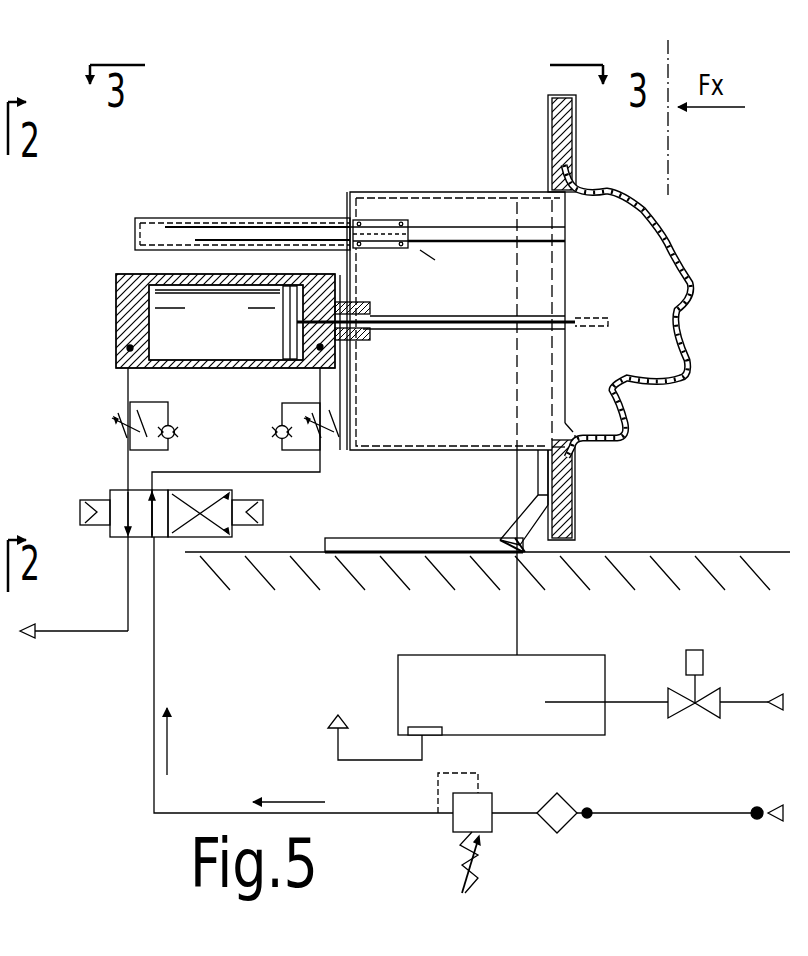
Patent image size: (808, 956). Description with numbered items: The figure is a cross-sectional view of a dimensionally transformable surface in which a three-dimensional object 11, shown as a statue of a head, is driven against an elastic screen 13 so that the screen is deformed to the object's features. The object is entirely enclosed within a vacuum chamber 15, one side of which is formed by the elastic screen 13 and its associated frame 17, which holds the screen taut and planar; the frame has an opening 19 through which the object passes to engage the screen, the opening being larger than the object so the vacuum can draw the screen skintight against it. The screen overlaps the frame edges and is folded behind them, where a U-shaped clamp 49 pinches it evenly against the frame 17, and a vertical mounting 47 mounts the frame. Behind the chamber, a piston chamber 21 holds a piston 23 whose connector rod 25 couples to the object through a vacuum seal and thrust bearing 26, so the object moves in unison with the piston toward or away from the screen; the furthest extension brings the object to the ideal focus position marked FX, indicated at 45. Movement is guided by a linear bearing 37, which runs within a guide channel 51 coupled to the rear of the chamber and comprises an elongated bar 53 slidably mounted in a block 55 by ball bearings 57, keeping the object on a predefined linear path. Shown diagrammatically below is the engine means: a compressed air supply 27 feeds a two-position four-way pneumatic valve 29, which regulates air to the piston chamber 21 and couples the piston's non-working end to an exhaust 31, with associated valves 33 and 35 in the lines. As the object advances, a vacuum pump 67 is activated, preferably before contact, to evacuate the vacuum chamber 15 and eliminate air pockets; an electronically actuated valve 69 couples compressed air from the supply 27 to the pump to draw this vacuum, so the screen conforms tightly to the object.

The three-dimensional object 11 is at (618, 218).
The elastic screen 13 is at (667, 223).
The vacuum chamber 15 is at (372, 190).
The frame 17 is at (560, 136).
The opening 19 is at (557, 416).
The piston chamber 21 is at (120, 275).
The piston 23 is at (285, 350).
The connector rod 25 is at (440, 325).
The vacuum seal and thrust bearing 26 is at (370, 340).
The compressed air supply 27 is at (778, 805).
The two-position four-way pneumatic valve 29 is at (110, 490).
The exhaust 31 is at (24, 642).
The valve 33 is at (322, 425).
The valve 35 is at (118, 437).
The linear bearing 37 is at (428, 254).
The focus position FX 45 is at (728, 107).
The vertical mounting 47 is at (423, 540).
The U-shaped clamp 49 is at (565, 95).
The guide channel 51 is at (222, 218).
The elongated bar 53 is at (488, 232).
The block 55 is at (402, 220).
The ball bearings 57 is at (365, 250).
The vacuum pump 67 is at (552, 655).
The electronically actuated valve 69 is at (715, 699).